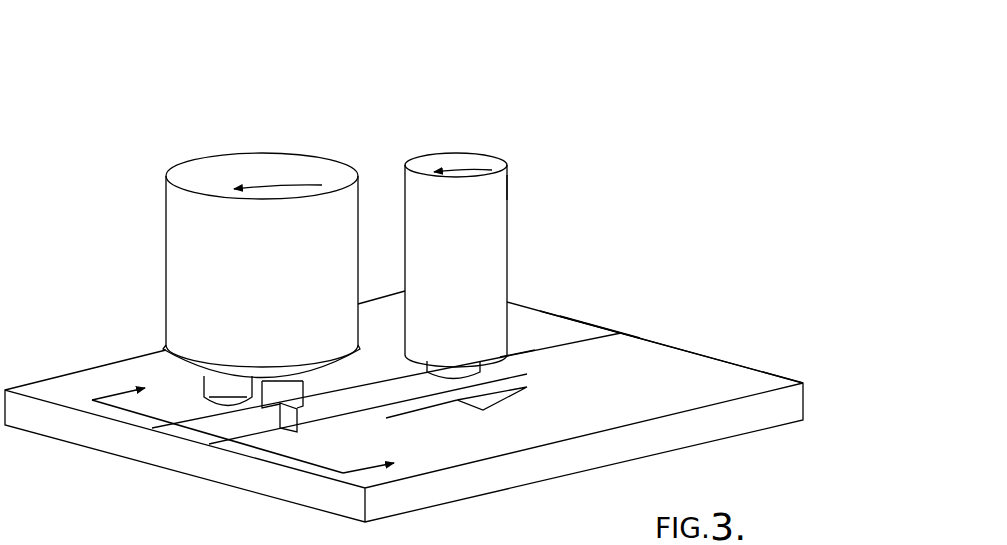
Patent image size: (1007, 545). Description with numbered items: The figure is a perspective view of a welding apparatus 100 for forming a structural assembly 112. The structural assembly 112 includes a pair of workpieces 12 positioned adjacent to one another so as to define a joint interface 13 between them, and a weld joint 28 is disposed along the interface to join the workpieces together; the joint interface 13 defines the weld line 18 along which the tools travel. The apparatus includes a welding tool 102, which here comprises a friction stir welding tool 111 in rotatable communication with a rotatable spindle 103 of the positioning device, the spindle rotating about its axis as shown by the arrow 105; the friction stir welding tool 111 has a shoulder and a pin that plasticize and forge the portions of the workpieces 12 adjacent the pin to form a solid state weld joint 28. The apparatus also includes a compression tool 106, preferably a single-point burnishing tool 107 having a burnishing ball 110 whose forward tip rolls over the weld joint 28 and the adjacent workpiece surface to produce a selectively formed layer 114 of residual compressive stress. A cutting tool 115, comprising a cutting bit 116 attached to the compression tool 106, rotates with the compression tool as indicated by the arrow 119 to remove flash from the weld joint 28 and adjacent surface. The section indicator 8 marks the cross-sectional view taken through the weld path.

The welding apparatus 100 is at (122, 92).
The workpiece 12 is at (565, 306).
The structural assembly 112 is at (590, 319).
The weld line 18 is at (601, 332).
The layer of residual compressive stress 114 is at (205, 427).
The joint interface 13 is at (535, 350).
The weld joint 28 is at (372, 390).
The section line 8- 8 is at (250, 426).
The compression tool 106 is at (165, 240).
The burnishing tool 107 is at (165, 298).
The arrow 119 is at (260, 188).
The burnishing ball 110 is at (236, 407).
The cutting bit 116 is at (283, 426).
The cutting tool 115 is at (302, 427).
The welding tool 102 is at (508, 232).
The spindle 103 is at (504, 187).
The arrow 105 is at (450, 168).
The friction stir welding tool 111 is at (480, 367).